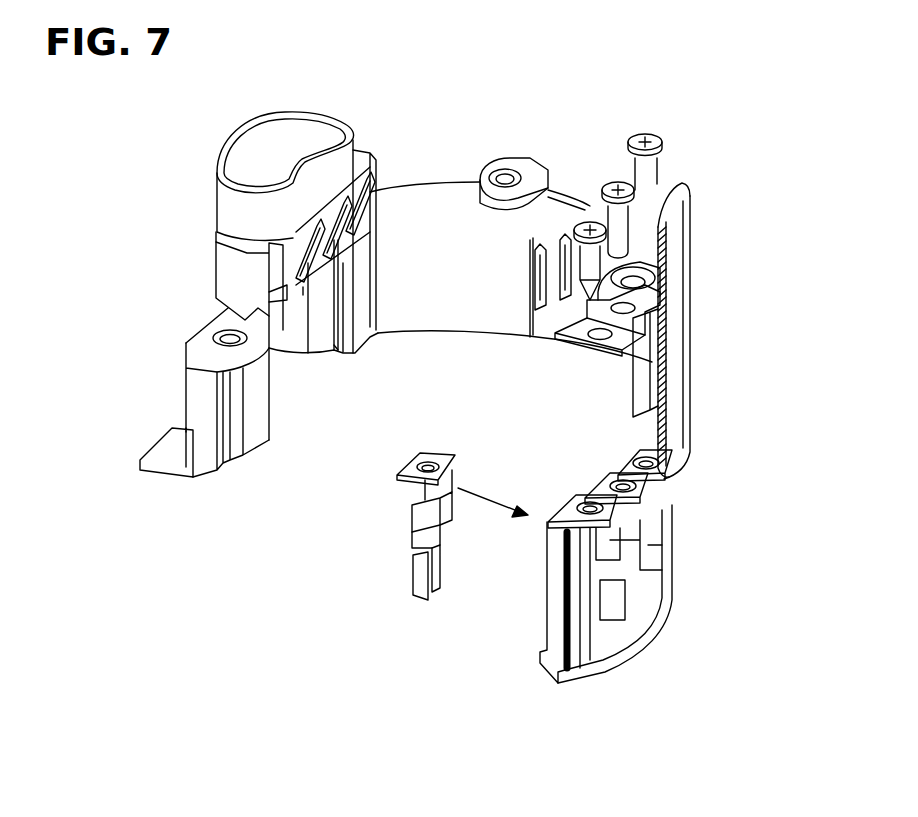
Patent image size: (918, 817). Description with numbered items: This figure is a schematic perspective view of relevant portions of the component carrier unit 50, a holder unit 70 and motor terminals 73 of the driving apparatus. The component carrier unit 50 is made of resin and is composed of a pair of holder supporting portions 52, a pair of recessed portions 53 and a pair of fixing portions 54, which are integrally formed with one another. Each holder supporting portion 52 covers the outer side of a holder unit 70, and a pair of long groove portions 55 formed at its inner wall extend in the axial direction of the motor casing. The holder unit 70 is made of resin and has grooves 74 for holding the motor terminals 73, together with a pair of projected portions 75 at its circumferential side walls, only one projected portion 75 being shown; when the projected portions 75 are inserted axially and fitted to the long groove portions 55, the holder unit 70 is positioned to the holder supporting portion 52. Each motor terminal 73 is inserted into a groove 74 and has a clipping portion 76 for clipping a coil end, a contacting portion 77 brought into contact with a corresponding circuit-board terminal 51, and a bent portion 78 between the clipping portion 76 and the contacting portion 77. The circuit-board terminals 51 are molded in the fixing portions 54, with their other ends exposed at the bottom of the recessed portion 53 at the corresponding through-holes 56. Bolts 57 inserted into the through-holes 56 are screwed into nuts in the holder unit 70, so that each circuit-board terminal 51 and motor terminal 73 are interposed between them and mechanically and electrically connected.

The component carrier unit 50 is at (468, 208).
The circuit-board terminal 51 is at (322, 180).
The holder supporting portion 52 is at (276, 347).
The recessed portion 53 is at (255, 152).
The fixing portion 54 is at (303, 287).
The long groove portion 55 is at (334, 345).
The through-hole 56 is at (635, 275).
The bolt 57 is at (578, 220).
The holder unit 70 is at (607, 600).
The motor terminal 73 is at (511, 502).
The groove 74 is at (655, 536).
The projected portion 75 is at (563, 603).
The clipping portion 76 is at (418, 578).
The contacting portion 77 is at (406, 466).
The bent portion 78 is at (418, 515).